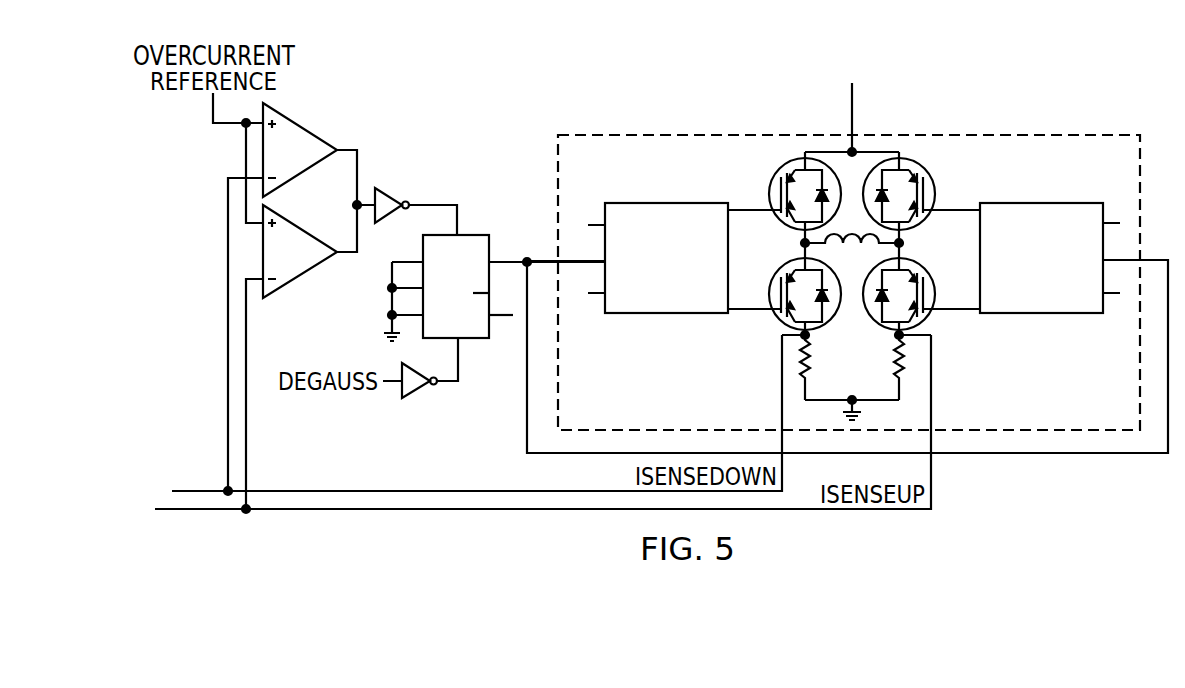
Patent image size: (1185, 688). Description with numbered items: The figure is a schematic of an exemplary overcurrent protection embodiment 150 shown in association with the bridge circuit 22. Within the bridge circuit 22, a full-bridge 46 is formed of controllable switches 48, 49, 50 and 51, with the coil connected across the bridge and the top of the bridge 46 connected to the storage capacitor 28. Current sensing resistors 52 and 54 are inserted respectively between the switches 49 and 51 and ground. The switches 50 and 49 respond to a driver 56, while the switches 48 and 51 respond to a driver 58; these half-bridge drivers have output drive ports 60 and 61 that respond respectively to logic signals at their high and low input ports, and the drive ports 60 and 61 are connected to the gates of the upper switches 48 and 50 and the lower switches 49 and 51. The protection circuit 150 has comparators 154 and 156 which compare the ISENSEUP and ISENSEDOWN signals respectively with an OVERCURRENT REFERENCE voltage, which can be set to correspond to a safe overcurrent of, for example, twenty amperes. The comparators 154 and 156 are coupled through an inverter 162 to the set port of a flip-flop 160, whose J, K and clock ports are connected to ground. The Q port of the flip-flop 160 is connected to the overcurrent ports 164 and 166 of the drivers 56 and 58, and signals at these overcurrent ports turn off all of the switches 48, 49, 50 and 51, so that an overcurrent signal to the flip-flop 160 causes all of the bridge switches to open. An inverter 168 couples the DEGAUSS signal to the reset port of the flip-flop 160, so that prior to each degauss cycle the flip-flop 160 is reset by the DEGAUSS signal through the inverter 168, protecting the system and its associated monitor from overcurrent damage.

The bridge circuit 22 is at (822, 135).
The storage capacitor 28 is at (852, 252).
The full-bridge 46 is at (793, 155).
The controllable switch 48 is at (796, 190).
The controllable switch 50 is at (906, 190).
The controllable switch 51 is at (794, 289).
The controllable switch 49 is at (911, 289).
The current sensing resistor 52 is at (884, 367).
The current sensing resistor 54 is at (821, 367).
The driver 56 is at (1057, 313).
The driver 58 is at (672, 313).
The output drive port 60 is at (765, 208).
The output drive port 61 is at (763, 311).
The protection circuit 150 is at (452, 150).
The comparator 154 is at (300, 150).
The comparator 156 is at (300, 251).
The flip-flop 160 is at (463, 271).
The inverter 162 is at (398, 194).
The overcurrent port 164 is at (1135, 250).
The overcurrent port 166 is at (566, 249).
The inverter 168 is at (425, 393).